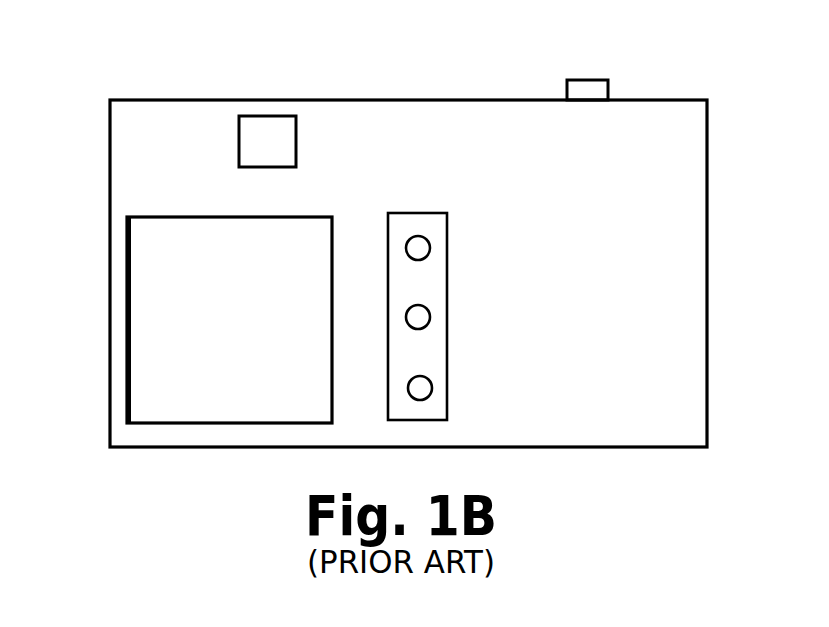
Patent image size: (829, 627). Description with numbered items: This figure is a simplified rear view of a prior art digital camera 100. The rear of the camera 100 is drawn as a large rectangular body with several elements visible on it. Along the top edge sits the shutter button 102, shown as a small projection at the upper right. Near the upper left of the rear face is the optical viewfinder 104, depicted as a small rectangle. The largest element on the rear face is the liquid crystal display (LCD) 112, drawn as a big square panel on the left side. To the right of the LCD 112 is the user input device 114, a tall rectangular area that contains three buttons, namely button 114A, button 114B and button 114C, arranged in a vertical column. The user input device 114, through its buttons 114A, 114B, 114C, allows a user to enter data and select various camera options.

The digital camera 100 is at (175, 83).
The shutter button 102 is at (584, 80).
The optical viewfinder 104 is at (267, 116).
The liquid crystal display (LCD) 112 is at (127, 312).
The user input device 114 is at (422, 213).
The button 114A is at (430, 248).
The button 114B is at (430, 316).
The button 114C is at (432, 388).